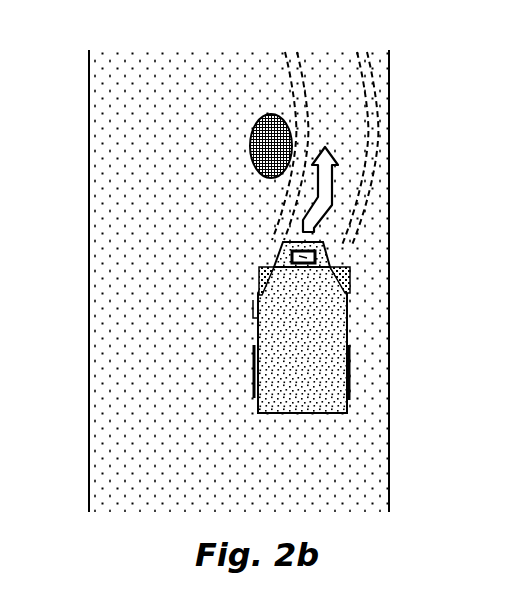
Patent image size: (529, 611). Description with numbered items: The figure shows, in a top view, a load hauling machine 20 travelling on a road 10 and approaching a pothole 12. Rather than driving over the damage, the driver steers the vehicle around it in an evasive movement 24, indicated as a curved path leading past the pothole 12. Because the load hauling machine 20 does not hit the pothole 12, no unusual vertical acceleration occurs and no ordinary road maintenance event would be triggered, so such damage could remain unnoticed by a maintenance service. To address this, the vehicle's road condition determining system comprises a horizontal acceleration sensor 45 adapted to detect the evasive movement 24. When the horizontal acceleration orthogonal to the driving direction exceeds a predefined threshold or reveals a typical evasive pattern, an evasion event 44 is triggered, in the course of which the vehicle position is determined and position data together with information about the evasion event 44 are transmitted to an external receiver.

The road 10 is at (110, 333).
The pothole 12 is at (255, 140).
The load hauling machine 20 is at (317, 358).
The evasive movement 24 is at (302, 97).
The evasion event 44 is at (325, 183).
The horizontal acceleration sensor 45 is at (313, 263).